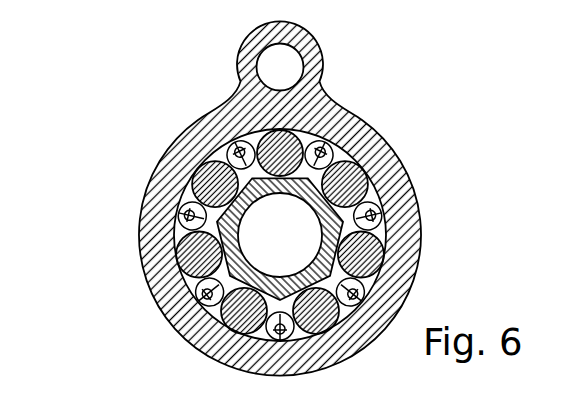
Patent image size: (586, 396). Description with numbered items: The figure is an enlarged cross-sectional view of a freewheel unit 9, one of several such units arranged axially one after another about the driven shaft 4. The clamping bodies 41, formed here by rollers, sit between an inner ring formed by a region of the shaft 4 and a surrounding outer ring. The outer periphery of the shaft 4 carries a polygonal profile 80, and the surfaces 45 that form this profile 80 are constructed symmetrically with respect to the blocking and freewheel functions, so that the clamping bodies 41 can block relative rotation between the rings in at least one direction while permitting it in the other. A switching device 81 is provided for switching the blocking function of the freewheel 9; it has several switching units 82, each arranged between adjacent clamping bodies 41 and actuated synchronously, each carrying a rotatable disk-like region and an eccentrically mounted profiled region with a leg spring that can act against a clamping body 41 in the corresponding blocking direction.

The freewheel unit 9 is at (116, 240).
The driven shaft 4 is at (387, 152).
The surfaces of the inner ring 45 is at (342, 206).
The clamping bodies 41 is at (380, 258).
The polygonal profile 80 is at (340, 152).
The switching device 81 is at (177, 207).
The switching units 82 is at (237, 148).